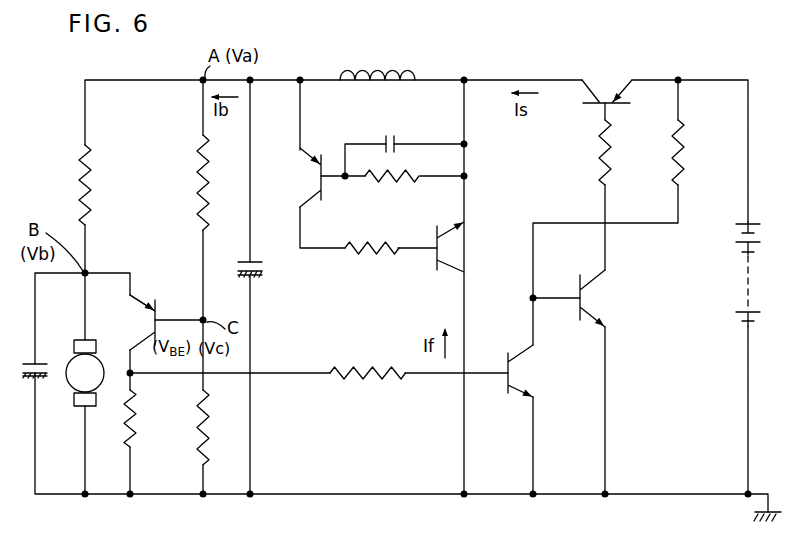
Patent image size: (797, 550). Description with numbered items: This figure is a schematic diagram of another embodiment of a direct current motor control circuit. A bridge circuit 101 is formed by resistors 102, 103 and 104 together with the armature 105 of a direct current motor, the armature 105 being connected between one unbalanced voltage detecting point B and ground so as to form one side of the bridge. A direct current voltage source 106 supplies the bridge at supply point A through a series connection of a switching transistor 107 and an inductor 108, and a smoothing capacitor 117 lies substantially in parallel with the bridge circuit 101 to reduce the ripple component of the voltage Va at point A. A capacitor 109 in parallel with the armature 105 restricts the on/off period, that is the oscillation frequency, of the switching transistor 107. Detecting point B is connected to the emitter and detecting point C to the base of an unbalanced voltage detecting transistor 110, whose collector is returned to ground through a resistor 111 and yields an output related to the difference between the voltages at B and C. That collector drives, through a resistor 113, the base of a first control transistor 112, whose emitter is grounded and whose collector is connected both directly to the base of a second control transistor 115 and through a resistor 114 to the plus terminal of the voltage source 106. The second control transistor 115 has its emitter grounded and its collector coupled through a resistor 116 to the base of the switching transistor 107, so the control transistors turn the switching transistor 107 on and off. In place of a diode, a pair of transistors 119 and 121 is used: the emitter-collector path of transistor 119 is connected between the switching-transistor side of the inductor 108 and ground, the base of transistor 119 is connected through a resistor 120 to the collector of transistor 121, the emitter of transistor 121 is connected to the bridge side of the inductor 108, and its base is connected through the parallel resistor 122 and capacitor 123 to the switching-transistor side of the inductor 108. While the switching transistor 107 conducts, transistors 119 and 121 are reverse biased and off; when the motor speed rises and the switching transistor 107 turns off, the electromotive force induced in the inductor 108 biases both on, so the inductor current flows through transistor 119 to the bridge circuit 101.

The bridge circuit 101 is at (161, 256).
The resistor 102 is at (78, 178).
The resistor 103 is at (197, 184).
The resistor 104 is at (197, 442).
The armature 105 is at (72, 388).
The direct current voltage source 106 is at (740, 278).
The switching transistor 107 is at (612, 97).
The inductor 108 is at (383, 76).
The capacitor 109 is at (42, 360).
The unbalanced voltage detecting transistor 110 is at (142, 302).
The resistor 111 is at (125, 408).
The first control transistor 112 is at (512, 396).
The resistor 113 is at (360, 380).
The resistor 114 is at (685, 150).
The second control transistor 115 is at (594, 300).
The resistor 116 is at (600, 163).
The smoothing capacitor 117 is at (262, 268).
The transistor 119 is at (443, 272).
The resistor 120 is at (370, 256).
The transistor 121 is at (318, 165).
The resistor 122 is at (386, 187).
The capacitor 123 is at (397, 140).